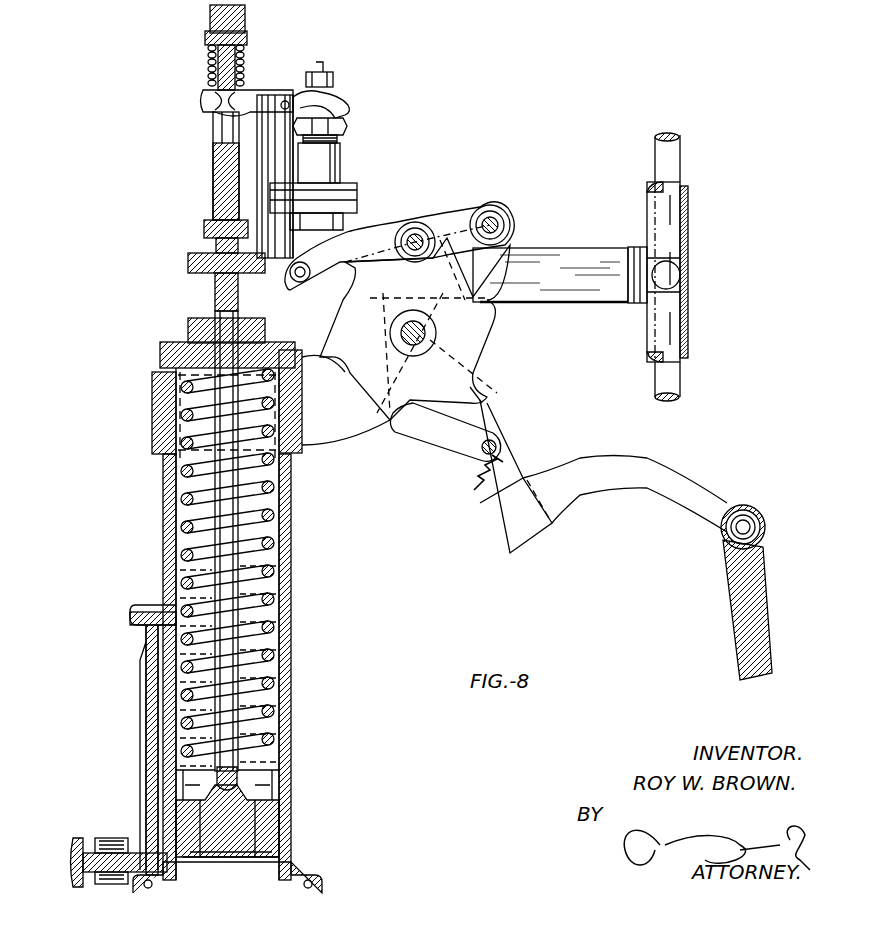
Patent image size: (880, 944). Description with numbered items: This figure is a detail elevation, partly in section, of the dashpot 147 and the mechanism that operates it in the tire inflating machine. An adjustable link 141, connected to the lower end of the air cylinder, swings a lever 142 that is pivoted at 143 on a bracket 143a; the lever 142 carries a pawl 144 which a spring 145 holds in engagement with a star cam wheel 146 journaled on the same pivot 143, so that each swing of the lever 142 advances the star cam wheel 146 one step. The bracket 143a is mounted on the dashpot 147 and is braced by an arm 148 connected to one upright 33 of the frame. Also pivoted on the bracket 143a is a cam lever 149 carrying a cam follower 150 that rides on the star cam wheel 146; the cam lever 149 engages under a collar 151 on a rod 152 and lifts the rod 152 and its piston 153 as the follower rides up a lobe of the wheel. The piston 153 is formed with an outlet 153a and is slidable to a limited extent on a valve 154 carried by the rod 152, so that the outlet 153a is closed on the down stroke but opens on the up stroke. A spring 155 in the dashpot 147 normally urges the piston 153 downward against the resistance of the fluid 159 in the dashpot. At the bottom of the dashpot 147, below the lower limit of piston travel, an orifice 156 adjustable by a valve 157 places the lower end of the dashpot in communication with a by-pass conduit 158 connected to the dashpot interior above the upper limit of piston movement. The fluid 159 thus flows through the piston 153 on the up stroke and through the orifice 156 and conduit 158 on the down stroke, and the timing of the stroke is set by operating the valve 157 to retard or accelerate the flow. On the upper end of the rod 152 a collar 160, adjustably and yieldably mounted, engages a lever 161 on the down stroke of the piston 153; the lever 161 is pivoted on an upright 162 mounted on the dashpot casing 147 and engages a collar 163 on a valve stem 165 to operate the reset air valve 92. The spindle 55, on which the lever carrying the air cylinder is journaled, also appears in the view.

The upright 33 is at (688, 225).
The spindle 55 is at (292, 110).
The reset air valve 92 is at (343, 168).
The adjustable link 141 is at (757, 603).
The lever 142 is at (503, 528).
The pivot 143 is at (427, 335).
The bracket 143a is at (323, 440).
The pawl 144 is at (440, 437).
The spring 145 is at (475, 490).
The star cam wheel 146 is at (470, 358).
The dashpot 147 is at (167, 487).
The arm 148 is at (560, 263).
The cam lever 149 is at (362, 243).
The cam follower 150 is at (427, 220).
The collar 151 is at (197, 252).
The rod 152 is at (217, 303).
The piston 153 is at (290, 803).
The outlet 153a is at (283, 848).
The valve 154 is at (288, 820).
The spring 155 is at (277, 615).
The orifice 156 is at (227, 875).
The valve 157 is at (103, 848).
The by-pass conduit 158 is at (155, 727).
The fluid 159 is at (270, 578).
The collar 160 is at (208, 90).
The lever 161 is at (250, 97).
The upright 162 is at (265, 133).
The collar 163 is at (327, 67).
The valve stem 165 is at (330, 107).